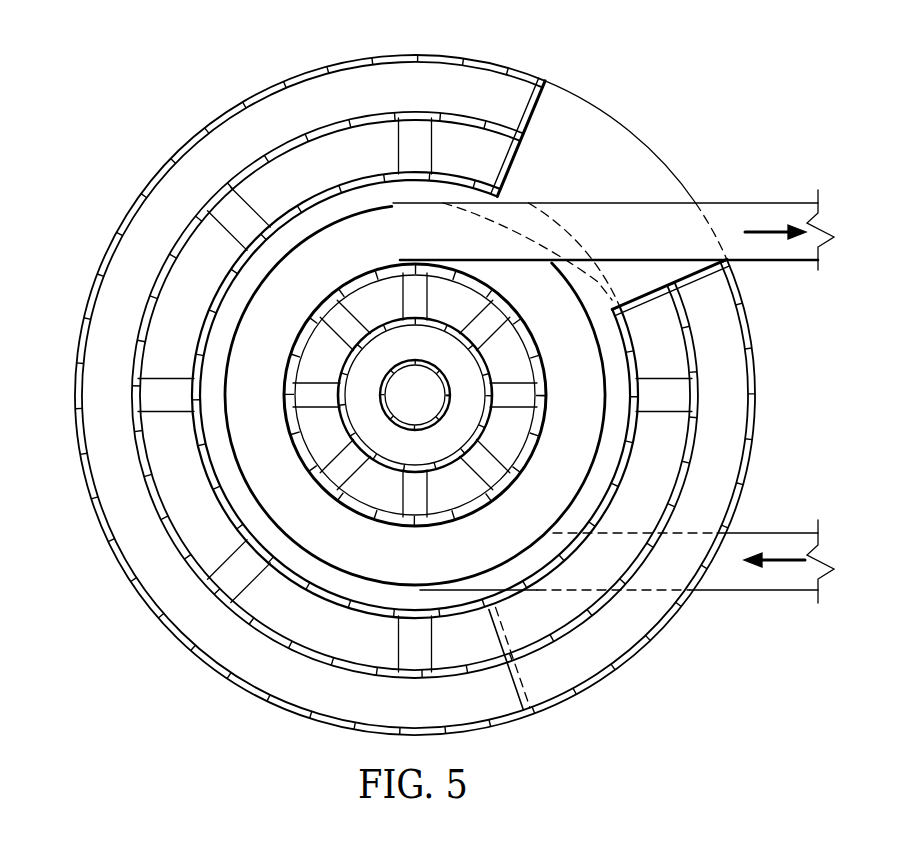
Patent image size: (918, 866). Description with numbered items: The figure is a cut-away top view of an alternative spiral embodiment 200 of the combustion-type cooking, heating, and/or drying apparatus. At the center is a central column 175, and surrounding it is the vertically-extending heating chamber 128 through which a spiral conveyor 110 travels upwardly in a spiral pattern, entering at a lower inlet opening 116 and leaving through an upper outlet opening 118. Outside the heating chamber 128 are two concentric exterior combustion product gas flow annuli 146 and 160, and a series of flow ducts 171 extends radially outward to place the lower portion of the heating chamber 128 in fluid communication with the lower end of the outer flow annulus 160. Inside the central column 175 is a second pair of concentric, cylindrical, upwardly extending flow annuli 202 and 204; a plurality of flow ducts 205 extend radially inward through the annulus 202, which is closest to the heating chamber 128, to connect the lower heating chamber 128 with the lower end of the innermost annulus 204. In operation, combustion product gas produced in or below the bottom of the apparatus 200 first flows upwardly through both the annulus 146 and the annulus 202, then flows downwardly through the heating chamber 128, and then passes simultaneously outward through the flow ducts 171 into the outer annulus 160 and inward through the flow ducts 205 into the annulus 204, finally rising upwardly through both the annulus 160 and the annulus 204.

The alternative spiral embodiment 200 is at (137, 60).
The upper outlet opening 118 is at (626, 166).
The heating chamber 128 is at (260, 318).
The flow ducts 171 is at (396, 152).
The flow ducts 205 is at (358, 312).
The central flow annulus 204 is at (478, 383).
The central flow annulus 202 is at (313, 430).
The central column 175 is at (420, 413).
The spiral conveyor 110 is at (790, 262).
The lower inlet opening 116 is at (626, 628).
The combustion product gas flow annulus 146 is at (175, 503).
The outer combustion product gas flow annulus 160 is at (152, 585).